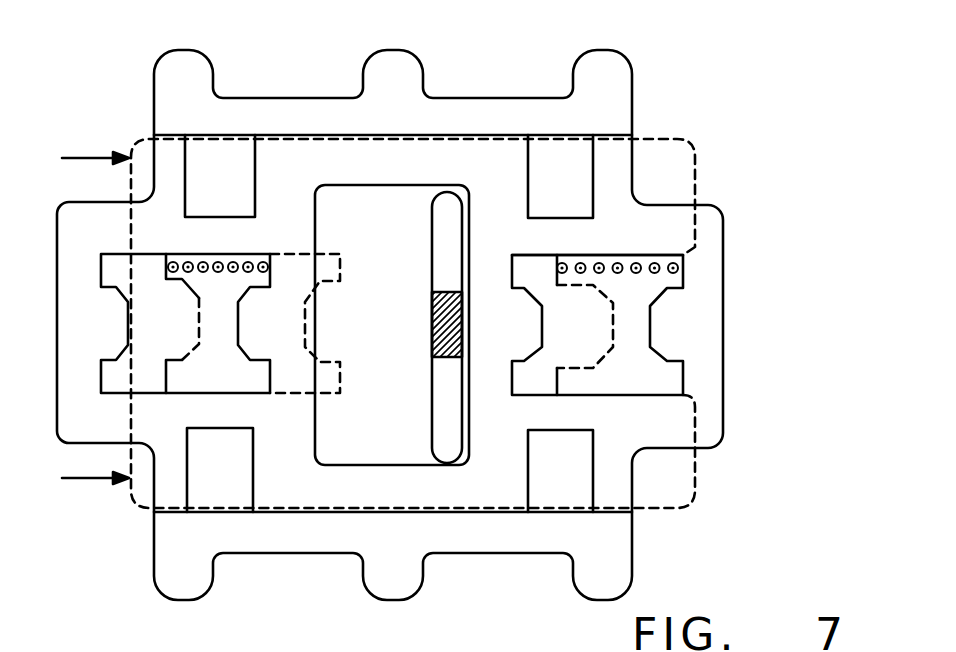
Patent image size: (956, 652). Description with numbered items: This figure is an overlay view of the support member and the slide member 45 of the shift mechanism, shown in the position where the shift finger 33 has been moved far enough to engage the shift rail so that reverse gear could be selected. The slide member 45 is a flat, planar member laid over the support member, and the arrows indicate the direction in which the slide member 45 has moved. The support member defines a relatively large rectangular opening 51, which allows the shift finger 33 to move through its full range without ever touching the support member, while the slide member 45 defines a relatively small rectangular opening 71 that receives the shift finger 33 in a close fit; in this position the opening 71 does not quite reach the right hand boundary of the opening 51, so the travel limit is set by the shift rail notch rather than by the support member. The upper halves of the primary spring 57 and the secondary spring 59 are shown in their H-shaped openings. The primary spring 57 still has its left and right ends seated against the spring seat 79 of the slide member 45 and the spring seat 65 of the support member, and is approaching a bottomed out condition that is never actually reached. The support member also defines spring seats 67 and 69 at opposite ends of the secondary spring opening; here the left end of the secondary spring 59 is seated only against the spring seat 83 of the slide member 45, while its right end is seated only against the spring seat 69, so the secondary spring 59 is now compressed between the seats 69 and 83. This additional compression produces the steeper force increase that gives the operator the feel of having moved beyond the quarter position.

The slide member 45 is at (700, 180).
The rectangular opening 51 is at (363, 463).
The rectangular opening 71 is at (432, 405).
The shift finger 33 is at (452, 292).
The primary spring 57 is at (210, 272).
The secondary spring 59 is at (652, 273).
The spring seat 65 is at (265, 372).
The spring seat 67 is at (513, 270).
The spring seat 69 is at (683, 372).
The spring seat 79 is at (167, 378).
The spring seat 83 is at (560, 387).